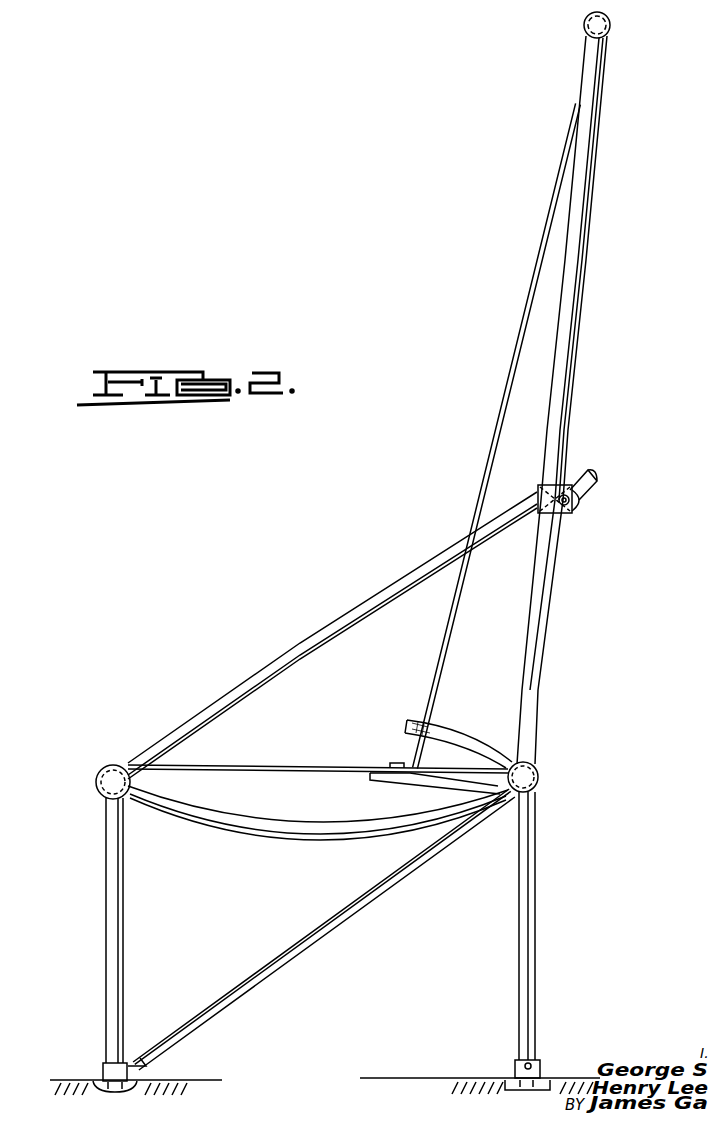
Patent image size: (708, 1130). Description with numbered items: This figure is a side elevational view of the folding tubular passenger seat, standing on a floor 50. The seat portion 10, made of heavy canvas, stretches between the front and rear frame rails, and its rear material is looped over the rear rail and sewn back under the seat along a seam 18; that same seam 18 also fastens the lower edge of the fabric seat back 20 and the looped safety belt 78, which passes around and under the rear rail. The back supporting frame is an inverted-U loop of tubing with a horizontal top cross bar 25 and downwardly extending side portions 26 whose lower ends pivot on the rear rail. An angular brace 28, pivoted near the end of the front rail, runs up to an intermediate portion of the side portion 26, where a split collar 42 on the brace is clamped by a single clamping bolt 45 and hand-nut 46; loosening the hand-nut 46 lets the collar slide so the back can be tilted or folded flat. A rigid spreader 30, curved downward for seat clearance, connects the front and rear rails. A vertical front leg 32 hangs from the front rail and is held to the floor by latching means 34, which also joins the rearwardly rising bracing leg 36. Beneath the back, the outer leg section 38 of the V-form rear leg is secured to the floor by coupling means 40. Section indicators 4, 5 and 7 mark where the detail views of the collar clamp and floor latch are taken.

The seat portion 10 is at (312, 745).
The seam 18 is at (398, 773).
The seat back 20 is at (493, 444).
The top cross bar 25 is at (606, 43).
The side portions 26 is at (583, 256).
The angular braces 28 is at (313, 641).
The spreaders 30 is at (312, 805).
The front legs 32 is at (113, 894).
The latching means 34 is at (103, 1070).
The bracing leg 36 is at (330, 914).
The outer leg section 38 is at (520, 893).
The coupling means 40 is at (541, 1067).
The split collar 42 is at (580, 513).
The clamping bolt 45 is at (563, 514).
The hand-nut 46 is at (593, 486).
The floor 50 is at (392, 1078).
The safety belt 78 is at (462, 738).
The section line 4- 4 is at (510, 497).
The section line 5- 5 is at (118, 1039).
The section line 7- 7 is at (104, 1040).